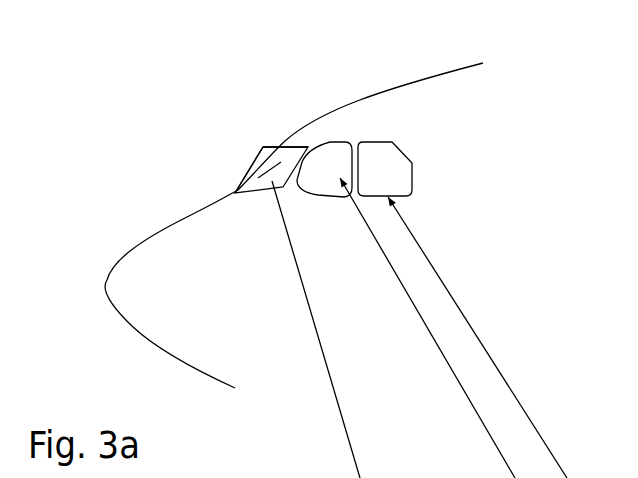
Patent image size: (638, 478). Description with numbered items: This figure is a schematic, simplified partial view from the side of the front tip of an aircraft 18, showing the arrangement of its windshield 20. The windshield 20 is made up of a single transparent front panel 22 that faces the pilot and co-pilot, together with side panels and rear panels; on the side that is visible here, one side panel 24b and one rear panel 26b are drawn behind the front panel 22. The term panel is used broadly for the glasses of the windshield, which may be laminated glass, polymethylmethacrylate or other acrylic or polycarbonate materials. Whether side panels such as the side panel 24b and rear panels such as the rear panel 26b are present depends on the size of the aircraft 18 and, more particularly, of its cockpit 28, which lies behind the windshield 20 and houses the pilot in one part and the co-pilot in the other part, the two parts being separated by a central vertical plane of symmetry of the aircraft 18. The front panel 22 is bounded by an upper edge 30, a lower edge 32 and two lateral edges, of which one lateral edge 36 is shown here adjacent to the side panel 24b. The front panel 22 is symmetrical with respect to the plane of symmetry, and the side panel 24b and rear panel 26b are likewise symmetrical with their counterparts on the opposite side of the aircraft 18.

The aircraft 18 is at (143, 120).
The windshield 20 is at (250, 134).
The front panel 22 is at (235, 192).
The side panel 24b is at (328, 162).
The rear panel 26b is at (378, 162).
The cockpit 28 is at (456, 144).
The upper edge 30 is at (284, 146).
The lower edge 32 is at (272, 180).
The lateral edge 36 is at (257, 164).